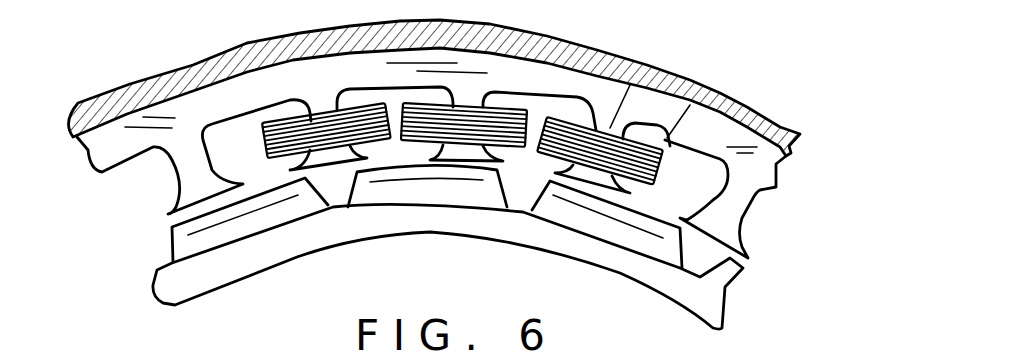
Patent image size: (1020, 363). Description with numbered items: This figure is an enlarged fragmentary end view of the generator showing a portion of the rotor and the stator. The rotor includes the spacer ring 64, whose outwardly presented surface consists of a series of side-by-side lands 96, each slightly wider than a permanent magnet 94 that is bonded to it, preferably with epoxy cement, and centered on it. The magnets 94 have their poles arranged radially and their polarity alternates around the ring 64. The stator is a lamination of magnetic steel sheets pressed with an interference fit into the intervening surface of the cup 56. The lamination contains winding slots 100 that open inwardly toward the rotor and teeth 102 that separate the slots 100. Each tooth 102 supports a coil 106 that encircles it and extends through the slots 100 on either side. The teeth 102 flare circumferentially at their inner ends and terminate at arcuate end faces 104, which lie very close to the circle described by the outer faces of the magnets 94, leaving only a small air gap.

The cup 56 is at (787, 127).
The spacer ring 64 is at (430, 222).
The permanent magnets 94 is at (275, 213).
The lands 96 is at (250, 233).
The winding slots 100 is at (393, 97).
The teeth 102 is at (187, 168).
The arcuate end faces 104 is at (333, 160).
The coil 106 is at (277, 128).